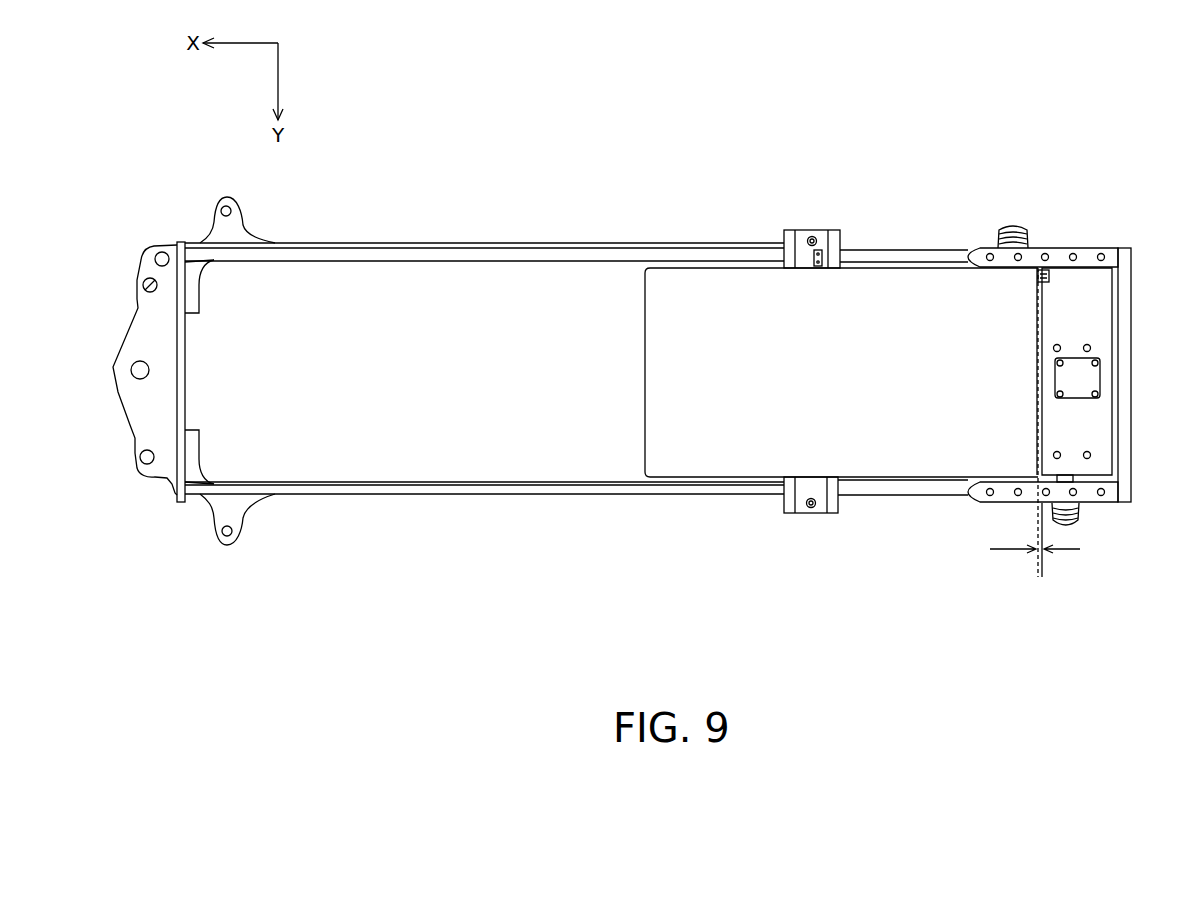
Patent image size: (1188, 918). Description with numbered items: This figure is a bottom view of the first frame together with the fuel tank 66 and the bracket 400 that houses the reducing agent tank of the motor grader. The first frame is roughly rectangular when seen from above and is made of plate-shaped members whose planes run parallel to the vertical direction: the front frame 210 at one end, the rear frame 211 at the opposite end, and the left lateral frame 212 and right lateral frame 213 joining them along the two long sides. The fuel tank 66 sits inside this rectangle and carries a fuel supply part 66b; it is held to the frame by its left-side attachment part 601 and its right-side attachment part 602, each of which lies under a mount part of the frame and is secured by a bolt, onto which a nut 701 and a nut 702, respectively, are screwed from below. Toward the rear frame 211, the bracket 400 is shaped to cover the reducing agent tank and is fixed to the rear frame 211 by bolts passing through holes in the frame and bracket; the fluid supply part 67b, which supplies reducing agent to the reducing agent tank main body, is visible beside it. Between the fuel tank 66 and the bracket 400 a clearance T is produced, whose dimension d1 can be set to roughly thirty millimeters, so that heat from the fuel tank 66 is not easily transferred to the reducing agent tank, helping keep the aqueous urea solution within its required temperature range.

The front frame 210 is at (165, 387).
The rear frame 211 is at (1125, 347).
The left lateral frame 212 is at (520, 255).
The right lateral frame 213 is at (571, 489).
The fuel tank 66 is at (729, 457).
The fuel supply part 66b is at (1007, 243).
The fluid supply part 67b is at (1078, 518).
The bracket 400 is at (1102, 453).
The left-side attachment part 601 is at (832, 247).
The right-side attachment part 602 is at (803, 490).
The nut 701 is at (808, 237).
The nut 702 is at (813, 507).
The clearance T is at (1038, 417).
The dimension of the clearance d1 is at (1035, 578).